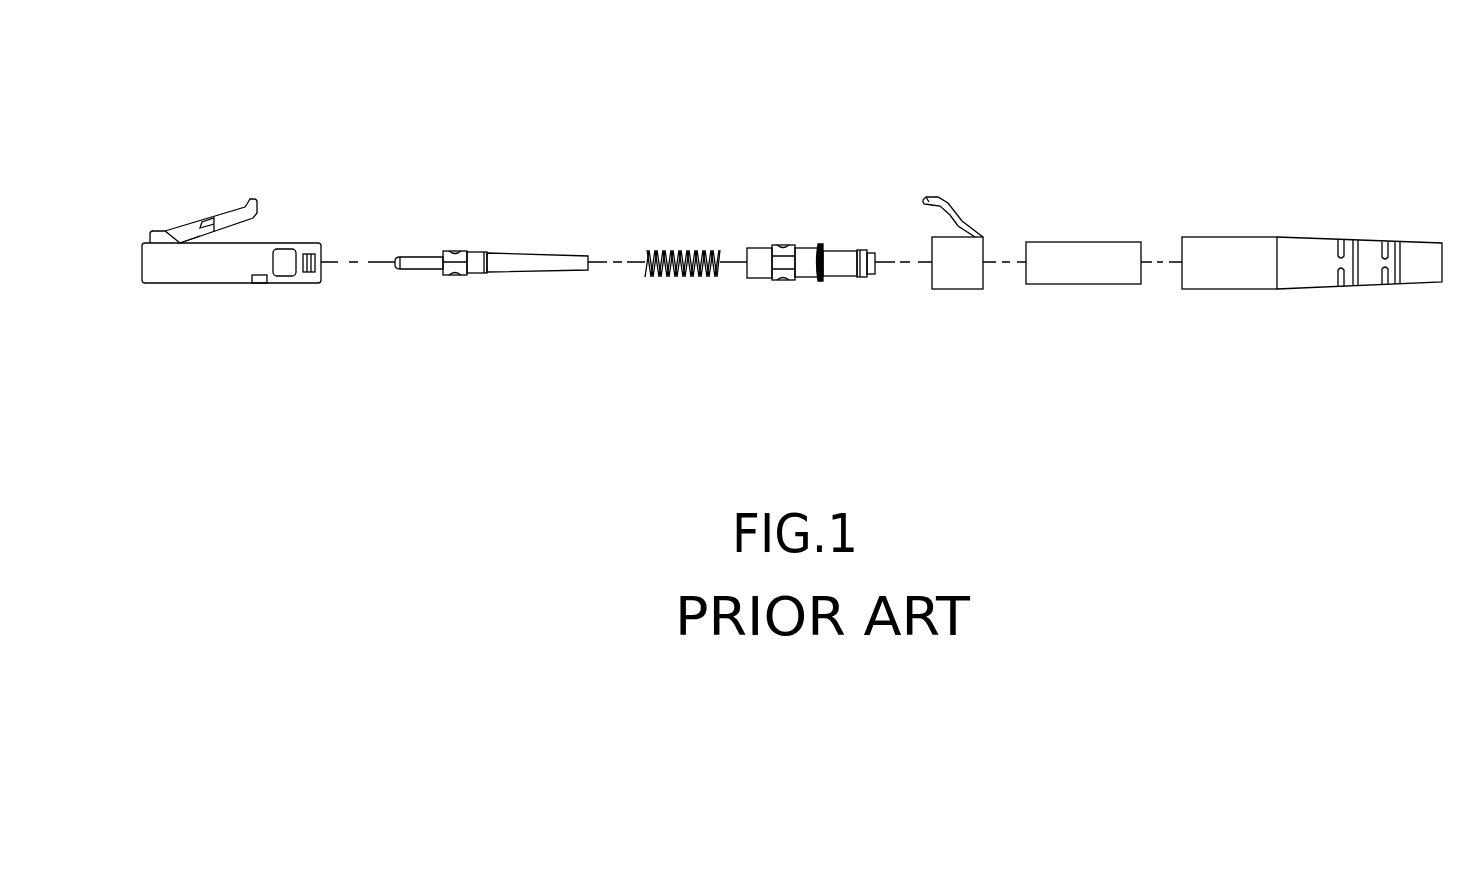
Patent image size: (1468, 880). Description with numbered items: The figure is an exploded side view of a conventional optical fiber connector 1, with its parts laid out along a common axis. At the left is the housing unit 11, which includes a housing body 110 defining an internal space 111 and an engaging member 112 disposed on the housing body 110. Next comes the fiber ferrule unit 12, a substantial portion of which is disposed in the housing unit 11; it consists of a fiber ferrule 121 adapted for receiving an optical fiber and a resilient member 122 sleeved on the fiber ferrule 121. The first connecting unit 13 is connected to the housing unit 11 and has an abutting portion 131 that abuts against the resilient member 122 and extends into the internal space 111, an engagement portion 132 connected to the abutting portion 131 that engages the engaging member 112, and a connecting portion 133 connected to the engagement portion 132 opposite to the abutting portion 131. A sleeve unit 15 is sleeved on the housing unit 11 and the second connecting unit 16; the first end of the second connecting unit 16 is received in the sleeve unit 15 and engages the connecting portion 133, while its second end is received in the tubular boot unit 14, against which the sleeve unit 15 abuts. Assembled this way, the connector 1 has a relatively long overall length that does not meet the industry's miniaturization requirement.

The conventional optical fiber connector 1 is at (504, 145).
The housing unit 11 is at (192, 168).
The housing body 110 is at (186, 278).
The internal space 111 is at (124, 243).
The engaging member 112 is at (285, 275).
The fiber ferrule unit 12 is at (598, 218).
The fiber ferrule 121 is at (475, 275).
The resilient member 122 is at (679, 278).
The first connecting unit 13 is at (804, 230).
The abutting portion 131 is at (760, 272).
The engagement portion 132 is at (787, 273).
The connecting portion 133 is at (840, 272).
The tubular boot unit 14 is at (1232, 282).
The sleeve unit 15 is at (957, 283).
The second connecting unit 16 is at (1087, 280).